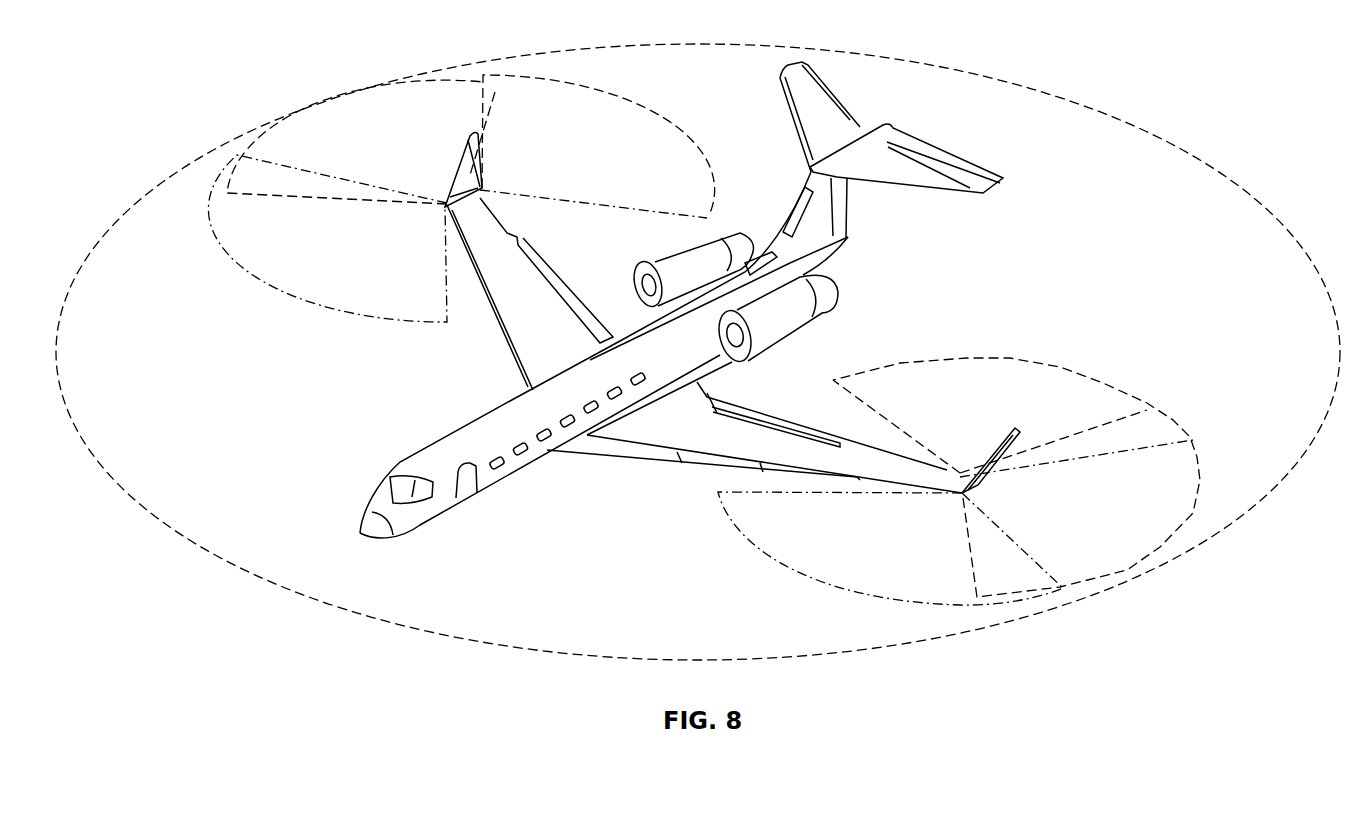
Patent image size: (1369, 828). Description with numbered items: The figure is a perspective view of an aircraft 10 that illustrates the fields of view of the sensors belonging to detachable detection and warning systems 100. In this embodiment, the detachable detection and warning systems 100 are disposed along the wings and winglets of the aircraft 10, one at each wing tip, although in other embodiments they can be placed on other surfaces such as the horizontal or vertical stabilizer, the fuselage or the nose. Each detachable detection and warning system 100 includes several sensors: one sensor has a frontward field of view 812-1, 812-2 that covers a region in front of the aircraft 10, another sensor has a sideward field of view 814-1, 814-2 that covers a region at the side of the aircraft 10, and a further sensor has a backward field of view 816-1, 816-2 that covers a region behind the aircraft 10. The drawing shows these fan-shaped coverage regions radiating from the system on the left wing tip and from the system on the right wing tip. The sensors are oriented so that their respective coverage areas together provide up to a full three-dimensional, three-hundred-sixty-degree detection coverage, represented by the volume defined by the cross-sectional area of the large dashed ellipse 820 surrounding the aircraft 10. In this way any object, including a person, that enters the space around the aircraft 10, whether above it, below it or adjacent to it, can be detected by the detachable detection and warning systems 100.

The aircraft 10 is at (350, 560).
The detachable detection and warning system 100 is at (448, 198).
The frontward field of view 812-1 is at (285, 295).
The sideward field of view 814-1 is at (273, 127).
The backward field of view 816-1 is at (643, 105).
The frontward field of view 812-2 is at (833, 592).
The sideward field of view 814-2 is at (1105, 585).
The backward field of view 816-2 is at (1160, 400).
The ellipse 820 is at (1188, 132).